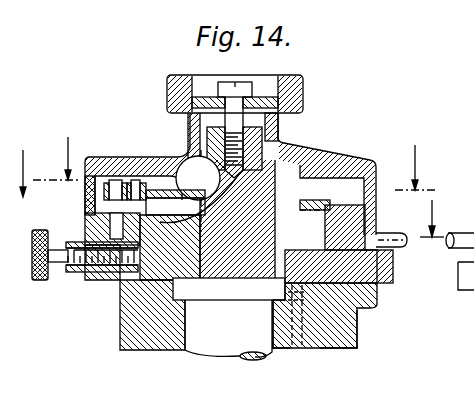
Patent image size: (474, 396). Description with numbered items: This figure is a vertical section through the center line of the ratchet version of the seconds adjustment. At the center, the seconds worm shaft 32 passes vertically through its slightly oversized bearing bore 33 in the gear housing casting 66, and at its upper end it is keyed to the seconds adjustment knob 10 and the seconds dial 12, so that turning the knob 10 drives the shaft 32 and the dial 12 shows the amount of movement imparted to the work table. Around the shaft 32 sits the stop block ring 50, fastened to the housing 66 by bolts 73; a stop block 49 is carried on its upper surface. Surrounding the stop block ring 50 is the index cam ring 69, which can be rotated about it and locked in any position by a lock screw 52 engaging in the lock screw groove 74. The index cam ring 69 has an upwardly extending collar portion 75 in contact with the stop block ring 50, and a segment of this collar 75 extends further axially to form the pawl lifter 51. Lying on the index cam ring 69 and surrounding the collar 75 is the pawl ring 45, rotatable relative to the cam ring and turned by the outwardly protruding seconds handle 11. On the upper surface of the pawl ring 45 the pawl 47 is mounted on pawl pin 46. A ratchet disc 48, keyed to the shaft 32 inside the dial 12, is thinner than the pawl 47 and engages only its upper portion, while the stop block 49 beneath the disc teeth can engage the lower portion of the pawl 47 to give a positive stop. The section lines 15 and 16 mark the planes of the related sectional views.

The seconds adjustment knob 10 is at (305, 98).
The seconds handle 11 is at (395, 247).
The seconds dial 12 is at (378, 172).
The section line 15 is at (235, 163).
The section line 16 is at (223, 193).
The seconds worm shaft 32 is at (238, 348).
The bearing bore 33 is at (280, 350).
The pawl ring 45 is at (88, 222).
The pawl pin 46 is at (110, 190).
The pawl 47 is at (85, 193).
The ratchet disc 48 is at (175, 202).
The stop block 49 is at (318, 214).
The stop block ring 50 is at (350, 302).
The pawl lifter 51 is at (134, 190).
The lock screw 52 is at (38, 270).
The gear housing casting 66 is at (345, 338).
The index cam ring 69 is at (393, 273).
The bolts 73 is at (330, 350).
The lock screw groove 74 is at (378, 287).
The collar portion 75 is at (153, 242).